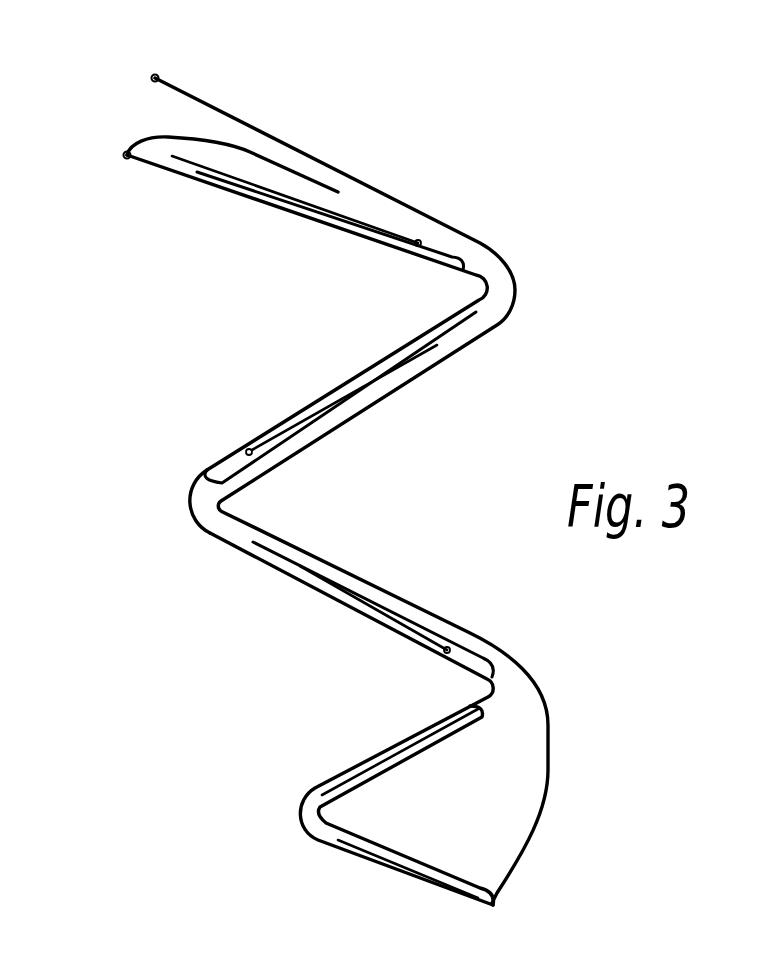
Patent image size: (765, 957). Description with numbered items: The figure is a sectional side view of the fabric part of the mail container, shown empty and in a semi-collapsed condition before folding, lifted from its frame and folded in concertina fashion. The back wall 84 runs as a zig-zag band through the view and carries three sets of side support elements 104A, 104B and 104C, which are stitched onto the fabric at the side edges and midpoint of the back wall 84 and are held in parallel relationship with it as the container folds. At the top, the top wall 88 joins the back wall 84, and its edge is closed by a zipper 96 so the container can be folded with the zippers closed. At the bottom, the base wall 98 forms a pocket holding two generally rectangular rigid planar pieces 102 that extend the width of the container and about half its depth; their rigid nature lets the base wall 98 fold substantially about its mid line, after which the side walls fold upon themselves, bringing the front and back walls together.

The back wall 84 is at (190, 179).
The top wall 88 is at (143, 138).
The zipper 96 is at (154, 74).
The base wall 98 is at (387, 872).
The rigid planar pieces 102 is at (387, 757).
The side support elements 104A is at (396, 604).
The side support elements 104B is at (403, 372).
The side support elements 104C is at (302, 207).